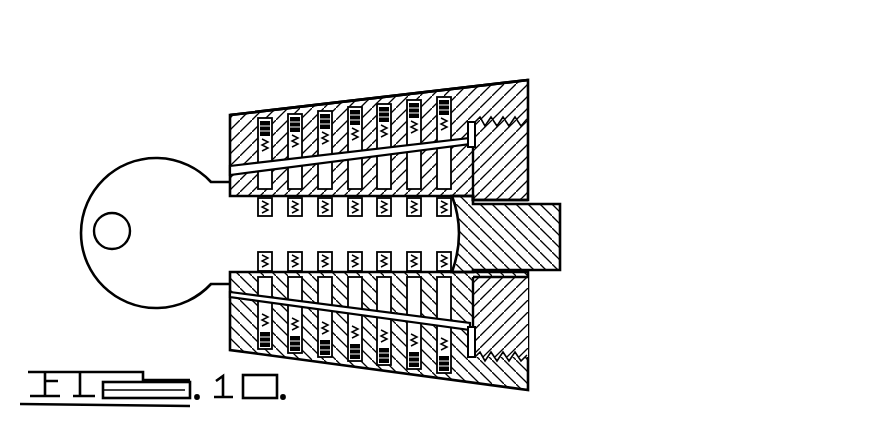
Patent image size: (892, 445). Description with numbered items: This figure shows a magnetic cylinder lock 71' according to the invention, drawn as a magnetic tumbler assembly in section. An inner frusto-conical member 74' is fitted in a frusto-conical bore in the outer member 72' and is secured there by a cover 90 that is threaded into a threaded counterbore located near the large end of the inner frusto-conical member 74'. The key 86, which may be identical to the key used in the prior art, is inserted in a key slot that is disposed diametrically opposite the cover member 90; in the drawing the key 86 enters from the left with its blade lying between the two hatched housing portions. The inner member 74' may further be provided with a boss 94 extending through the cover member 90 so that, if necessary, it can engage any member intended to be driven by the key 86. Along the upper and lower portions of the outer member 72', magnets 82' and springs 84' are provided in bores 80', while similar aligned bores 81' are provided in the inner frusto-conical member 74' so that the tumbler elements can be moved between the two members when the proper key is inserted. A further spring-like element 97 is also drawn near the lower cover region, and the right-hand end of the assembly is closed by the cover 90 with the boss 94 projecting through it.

The key 86 is at (190, 233).
The magnetic cylinder lock 71' is at (415, 124).
The outer member 72' is at (387, 74).
The springs 84' is at (461, 110).
The aligned bores 81' is at (517, 161).
The magnets 82' is at (535, 103).
The bores 80' is at (322, 151).
The inner frusto-conical member 74' is at (528, 143).
The cover 90 is at (510, 308).
The lower spring 97 is at (522, 351).
The boss 94 is at (547, 236).